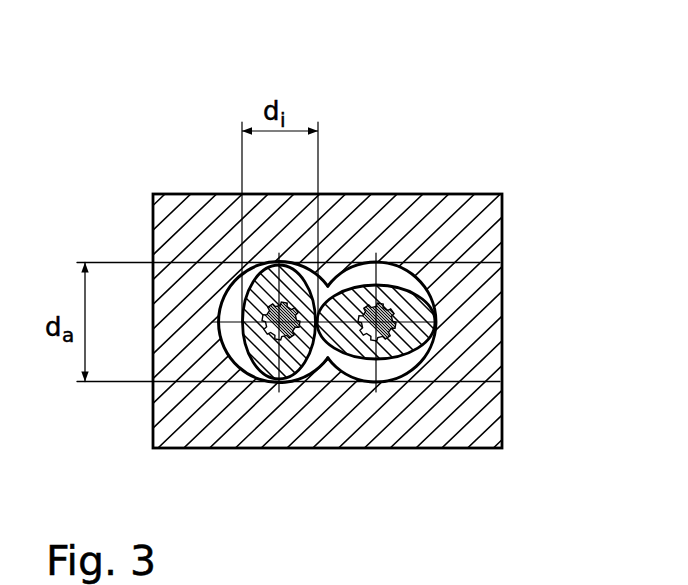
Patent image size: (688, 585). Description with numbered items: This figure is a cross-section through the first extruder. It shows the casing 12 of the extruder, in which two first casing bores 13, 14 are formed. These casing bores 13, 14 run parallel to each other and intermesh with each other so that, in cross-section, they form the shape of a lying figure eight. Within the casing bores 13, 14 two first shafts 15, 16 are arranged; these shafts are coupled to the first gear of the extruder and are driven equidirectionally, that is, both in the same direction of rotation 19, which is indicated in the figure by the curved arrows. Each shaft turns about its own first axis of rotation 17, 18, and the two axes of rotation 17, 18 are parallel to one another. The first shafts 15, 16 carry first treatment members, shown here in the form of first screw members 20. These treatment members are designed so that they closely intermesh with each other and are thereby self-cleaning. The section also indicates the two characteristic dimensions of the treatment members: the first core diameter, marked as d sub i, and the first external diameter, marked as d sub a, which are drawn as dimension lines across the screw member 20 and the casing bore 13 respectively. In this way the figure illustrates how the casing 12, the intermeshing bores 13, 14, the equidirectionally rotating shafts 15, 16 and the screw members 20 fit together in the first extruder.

The casing 12 is at (402, 192).
The first casing bore 13 is at (343, 271).
The first casing bore 14 is at (234, 345).
The first shaft 15 is at (391, 314).
The first shaft 16 is at (267, 385).
The first axis of rotation 17 is at (428, 342).
The first axis of rotation 18 is at (296, 372).
The direction of rotation 19 is at (208, 308).
The first screw member 20 is at (271, 303).